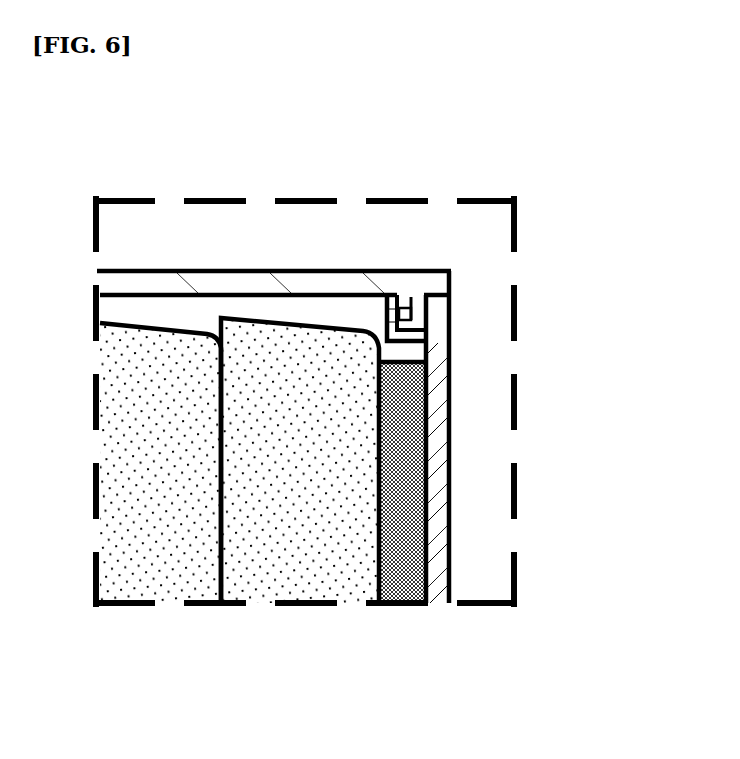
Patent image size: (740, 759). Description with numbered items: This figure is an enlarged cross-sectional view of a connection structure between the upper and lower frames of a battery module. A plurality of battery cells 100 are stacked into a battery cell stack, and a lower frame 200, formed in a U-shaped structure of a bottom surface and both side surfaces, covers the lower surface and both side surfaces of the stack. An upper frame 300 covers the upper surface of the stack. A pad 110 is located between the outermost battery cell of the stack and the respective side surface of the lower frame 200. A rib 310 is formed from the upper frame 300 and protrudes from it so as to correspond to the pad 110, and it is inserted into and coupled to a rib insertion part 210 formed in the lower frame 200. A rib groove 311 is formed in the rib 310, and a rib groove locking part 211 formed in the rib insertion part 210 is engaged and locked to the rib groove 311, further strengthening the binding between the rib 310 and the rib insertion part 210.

The battery cell 100 is at (298, 575).
The pad 110 is at (408, 583).
The lower frame 200 is at (435, 565).
The rib insertion part 210 is at (400, 338).
The rib groove locking part 211 is at (398, 312).
The upper frame 300 is at (240, 282).
The rib 310 is at (410, 318).
The rib groove 311 is at (402, 308).